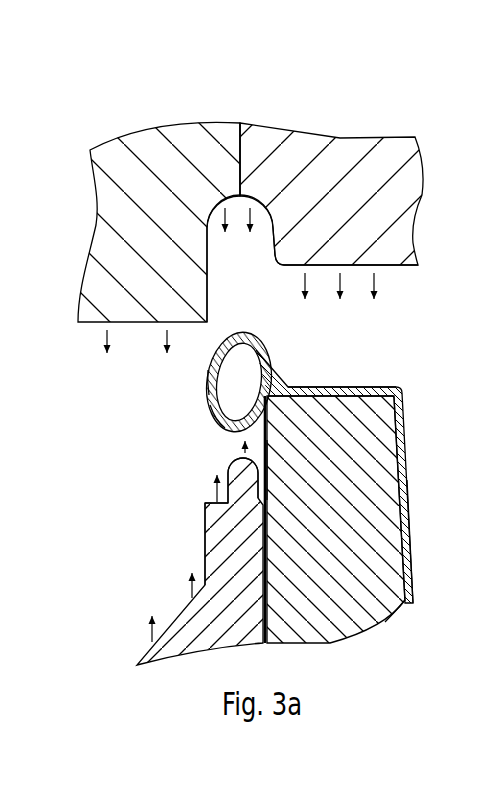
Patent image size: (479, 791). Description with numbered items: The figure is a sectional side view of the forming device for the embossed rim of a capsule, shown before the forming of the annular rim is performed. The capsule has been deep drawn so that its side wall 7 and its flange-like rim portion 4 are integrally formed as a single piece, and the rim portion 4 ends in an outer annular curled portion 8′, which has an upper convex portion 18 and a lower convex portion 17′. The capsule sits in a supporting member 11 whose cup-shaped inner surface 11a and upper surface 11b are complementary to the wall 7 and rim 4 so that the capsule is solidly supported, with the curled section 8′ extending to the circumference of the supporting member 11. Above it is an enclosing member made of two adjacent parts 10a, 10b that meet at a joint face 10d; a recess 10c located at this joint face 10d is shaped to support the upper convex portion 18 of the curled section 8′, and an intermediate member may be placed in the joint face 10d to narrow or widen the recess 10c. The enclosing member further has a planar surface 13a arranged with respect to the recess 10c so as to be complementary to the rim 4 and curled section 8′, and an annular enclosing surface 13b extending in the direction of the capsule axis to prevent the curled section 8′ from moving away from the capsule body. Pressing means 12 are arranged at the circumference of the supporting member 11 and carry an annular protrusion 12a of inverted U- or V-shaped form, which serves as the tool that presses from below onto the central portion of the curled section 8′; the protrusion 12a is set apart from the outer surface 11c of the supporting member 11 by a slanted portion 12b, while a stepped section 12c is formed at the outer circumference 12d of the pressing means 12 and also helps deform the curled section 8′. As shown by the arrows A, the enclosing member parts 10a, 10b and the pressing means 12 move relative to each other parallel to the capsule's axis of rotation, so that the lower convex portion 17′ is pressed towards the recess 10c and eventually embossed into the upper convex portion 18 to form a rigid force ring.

The rim portion 4 is at (327, 387).
The side wall 7 is at (414, 553).
The outer annular curled portion 8′ is at (213, 363).
The enclosing member part 10a is at (285, 252).
The enclosing member part 10b is at (161, 212).
The recess 10c is at (263, 200).
The joint face 10d is at (232, 146).
The supporting member 11 is at (356, 527).
The cup-shaped inner surface 11a is at (398, 600).
The upper surface 11b is at (333, 395).
The outer surface 11c is at (268, 485).
The pressing means 12 is at (248, 577).
The annular protrusion 12a is at (230, 462).
The slanted portion 12b is at (268, 468).
The stepped section 12c is at (215, 500).
The outer face of slide 12d is at (205, 537).
The planar surface 13a is at (352, 267).
The annular enclosing surface 13b is at (213, 290).
The lower convex portion 17′ is at (208, 418).
The upper convex portion 18 is at (280, 342).
The arrows A is at (377, 287).